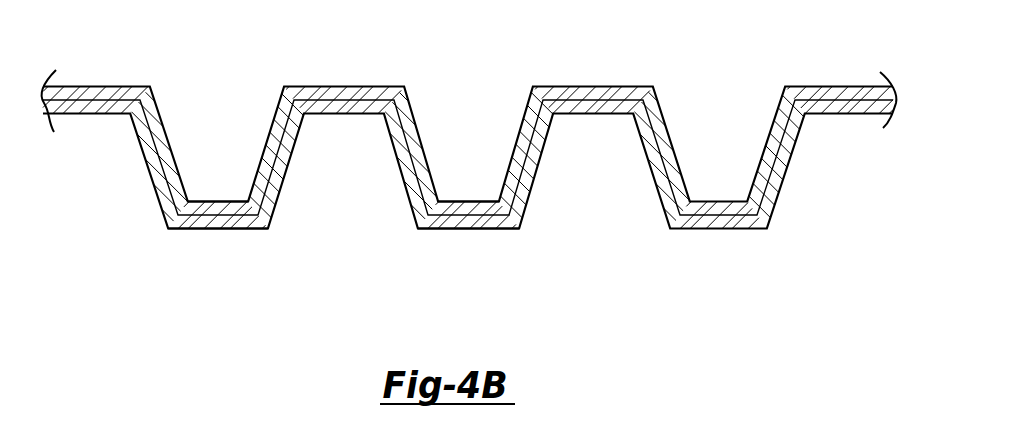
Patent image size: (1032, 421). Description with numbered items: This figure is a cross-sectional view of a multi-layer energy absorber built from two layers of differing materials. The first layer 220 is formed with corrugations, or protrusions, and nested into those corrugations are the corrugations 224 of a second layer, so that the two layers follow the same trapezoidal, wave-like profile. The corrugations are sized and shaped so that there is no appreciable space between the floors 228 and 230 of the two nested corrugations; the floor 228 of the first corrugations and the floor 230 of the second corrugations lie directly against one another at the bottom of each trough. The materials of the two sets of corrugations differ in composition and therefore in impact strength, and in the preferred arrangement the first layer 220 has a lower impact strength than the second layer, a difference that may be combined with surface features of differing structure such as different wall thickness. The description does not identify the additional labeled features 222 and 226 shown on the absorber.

The first layer 220 is at (97, 115).
The trough portion 222 is at (217, 230).
The corrugations of the second layer 224 is at (213, 200).
The outer layer 226 is at (105, 86).
The floor of the first corrugations 228 is at (473, 232).
The floor of the second corrugations 230 is at (475, 200).